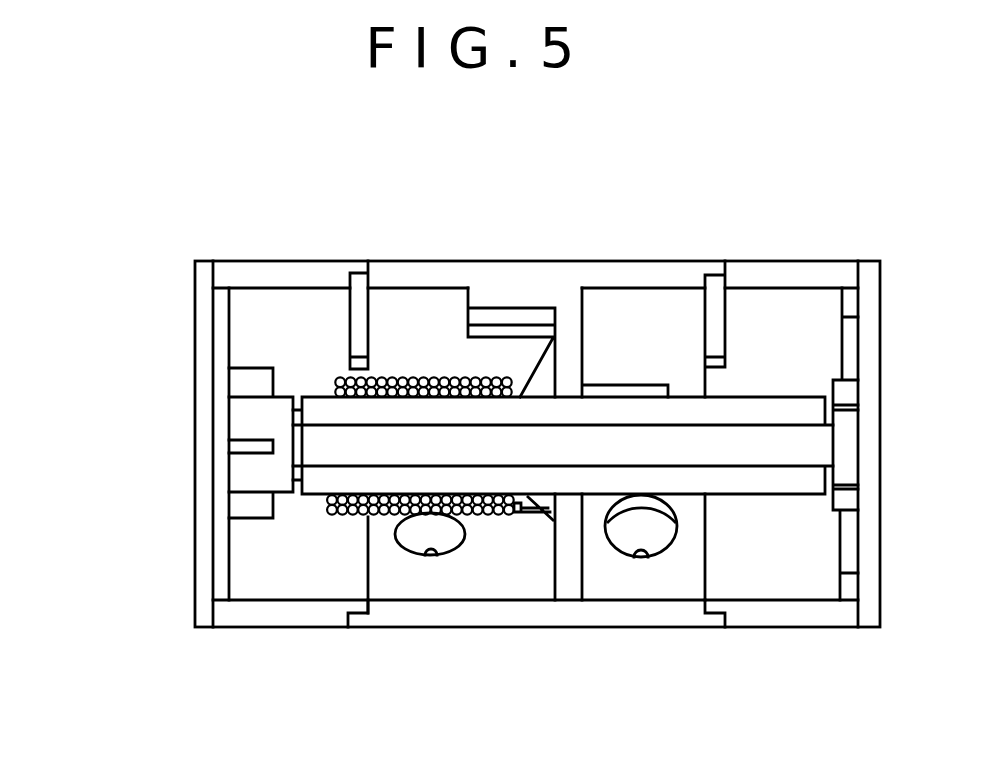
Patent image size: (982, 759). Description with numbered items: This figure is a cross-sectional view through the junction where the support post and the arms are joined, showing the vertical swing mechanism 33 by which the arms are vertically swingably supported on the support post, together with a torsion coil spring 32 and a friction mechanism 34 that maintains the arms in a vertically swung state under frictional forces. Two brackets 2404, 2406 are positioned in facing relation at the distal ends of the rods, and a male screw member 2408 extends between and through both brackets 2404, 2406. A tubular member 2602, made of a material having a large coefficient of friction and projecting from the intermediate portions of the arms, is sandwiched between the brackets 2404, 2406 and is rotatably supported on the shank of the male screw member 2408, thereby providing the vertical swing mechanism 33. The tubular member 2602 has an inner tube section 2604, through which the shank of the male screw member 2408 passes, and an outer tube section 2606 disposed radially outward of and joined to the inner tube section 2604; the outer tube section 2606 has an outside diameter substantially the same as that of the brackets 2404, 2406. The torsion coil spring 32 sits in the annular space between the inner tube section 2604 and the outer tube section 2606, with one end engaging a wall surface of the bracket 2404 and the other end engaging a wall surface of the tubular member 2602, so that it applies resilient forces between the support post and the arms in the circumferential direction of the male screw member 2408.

The torsion coil spring 32 is at (460, 383).
The vertical swing mechanism 33 is at (183, 368).
The friction mechanism 34 is at (456, 444).
The bracket 2404 is at (292, 262).
The bracket 2406 is at (786, 262).
The male screw member 2408 is at (772, 445).
The tubular member 2602 is at (405, 260).
The inner tube section 2604 is at (597, 494).
The outer tube section 2606 is at (444, 628).